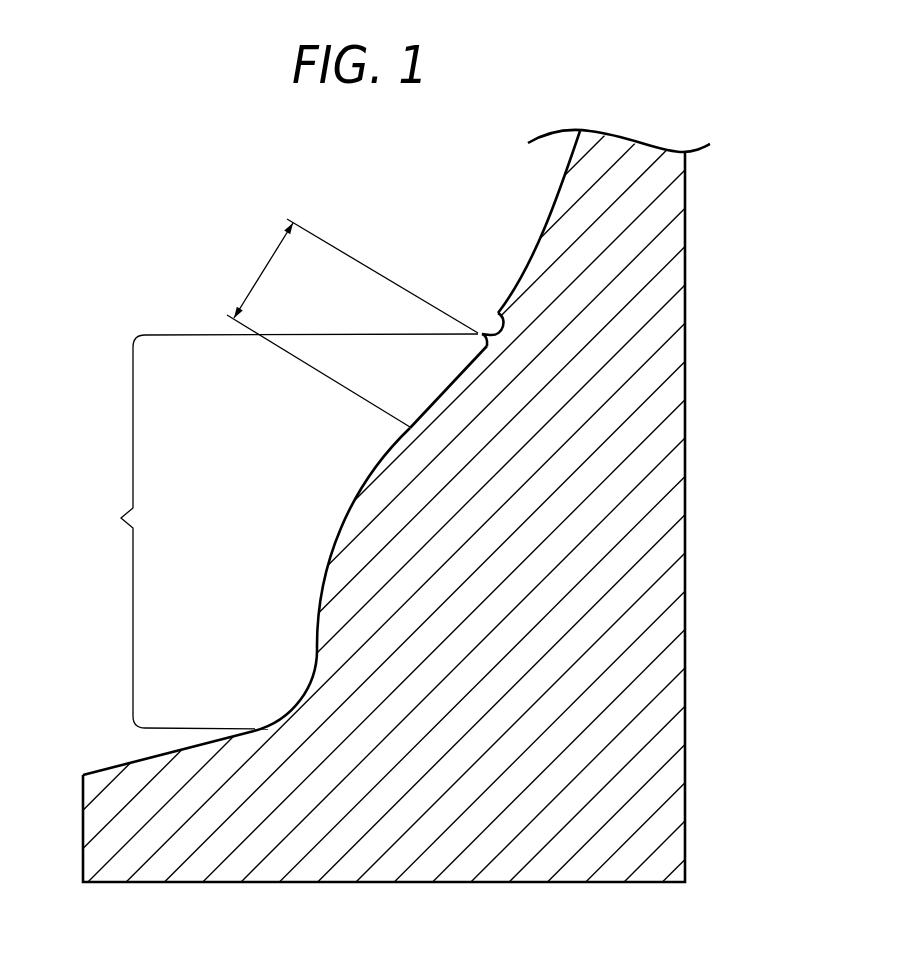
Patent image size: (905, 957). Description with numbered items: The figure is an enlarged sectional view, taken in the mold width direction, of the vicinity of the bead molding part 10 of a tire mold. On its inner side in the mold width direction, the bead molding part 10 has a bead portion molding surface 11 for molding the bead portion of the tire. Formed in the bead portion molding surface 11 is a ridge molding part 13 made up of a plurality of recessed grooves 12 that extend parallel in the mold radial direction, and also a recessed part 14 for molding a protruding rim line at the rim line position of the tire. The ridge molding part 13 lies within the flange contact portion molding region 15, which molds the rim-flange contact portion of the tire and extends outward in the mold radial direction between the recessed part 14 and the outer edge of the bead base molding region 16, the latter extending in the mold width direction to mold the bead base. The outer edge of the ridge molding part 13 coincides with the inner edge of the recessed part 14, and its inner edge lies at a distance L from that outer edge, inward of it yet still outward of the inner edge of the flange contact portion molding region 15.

The bead molding part 10 is at (692, 380).
The bead portion molding surface 11 is at (318, 472).
The recessed grooves 12 is at (462, 382).
The ridge molding part 13 is at (427, 393).
The recessed part 14 is at (488, 323).
The flange contact portion molding region 15 is at (283, 531).
The bead base molding region 16 is at (170, 757).